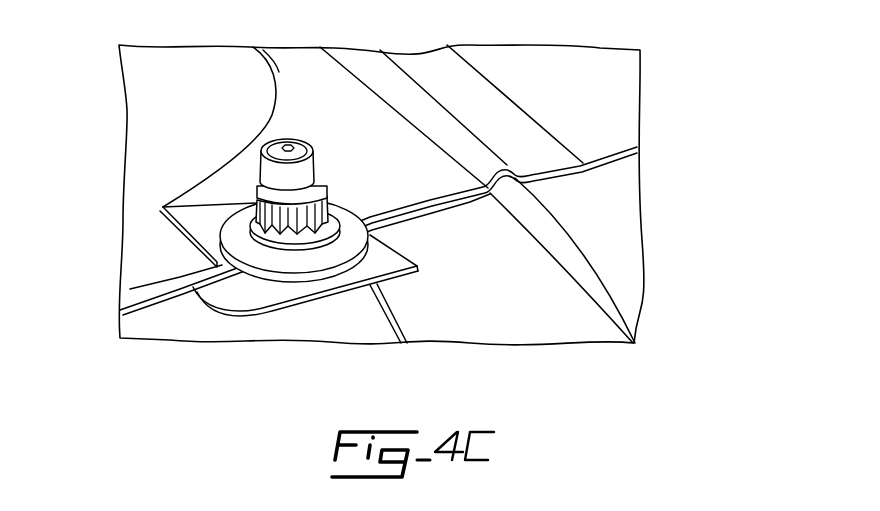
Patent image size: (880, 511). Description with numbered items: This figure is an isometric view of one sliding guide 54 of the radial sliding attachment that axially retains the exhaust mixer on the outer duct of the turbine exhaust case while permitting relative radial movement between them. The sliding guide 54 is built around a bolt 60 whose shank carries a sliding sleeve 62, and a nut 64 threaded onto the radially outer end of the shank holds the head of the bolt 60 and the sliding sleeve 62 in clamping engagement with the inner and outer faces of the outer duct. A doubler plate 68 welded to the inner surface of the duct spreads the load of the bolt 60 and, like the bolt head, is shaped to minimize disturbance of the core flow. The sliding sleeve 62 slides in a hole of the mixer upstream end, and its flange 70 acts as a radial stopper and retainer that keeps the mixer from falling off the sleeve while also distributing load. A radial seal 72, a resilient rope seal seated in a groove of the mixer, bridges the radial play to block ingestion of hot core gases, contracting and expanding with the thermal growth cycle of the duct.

The sliding guide 54 is at (389, 140).
The bolt 60 is at (280, 168).
The sliding sleeve 62 is at (260, 280).
The nut 64 is at (163, 207).
The doubler plate 68 is at (337, 277).
The flange 70 is at (347, 240).
The radial seal 72 is at (618, 307).